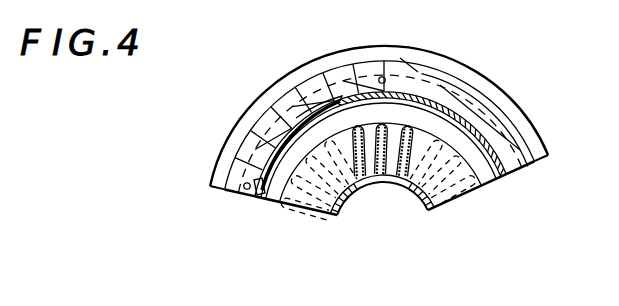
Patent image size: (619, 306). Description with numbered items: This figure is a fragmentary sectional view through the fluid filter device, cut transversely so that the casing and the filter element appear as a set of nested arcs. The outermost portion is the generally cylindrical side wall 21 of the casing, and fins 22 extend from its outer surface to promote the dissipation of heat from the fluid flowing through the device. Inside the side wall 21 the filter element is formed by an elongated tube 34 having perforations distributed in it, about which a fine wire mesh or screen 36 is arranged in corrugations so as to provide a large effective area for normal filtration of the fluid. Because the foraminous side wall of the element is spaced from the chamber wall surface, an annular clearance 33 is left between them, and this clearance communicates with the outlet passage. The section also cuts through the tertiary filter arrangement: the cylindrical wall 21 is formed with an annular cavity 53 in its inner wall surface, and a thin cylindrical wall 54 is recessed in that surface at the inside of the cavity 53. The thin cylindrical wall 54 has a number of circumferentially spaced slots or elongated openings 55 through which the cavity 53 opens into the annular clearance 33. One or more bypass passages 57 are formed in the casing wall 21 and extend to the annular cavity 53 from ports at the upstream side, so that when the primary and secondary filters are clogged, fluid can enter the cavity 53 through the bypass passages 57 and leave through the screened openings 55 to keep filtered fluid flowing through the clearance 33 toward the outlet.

The side wall 21 is at (413, 68).
The fins 22 is at (455, 59).
The annular clearance 33 is at (489, 180).
The elongated tube 34 is at (403, 188).
The fine wire mesh or screen 36 is at (380, 178).
The annular cavity 53 is at (490, 115).
The thin cylindrical wall 54 is at (383, 89).
The slots or elongated openings 55 is at (289, 132).
The bypass passages 57 is at (382, 76).